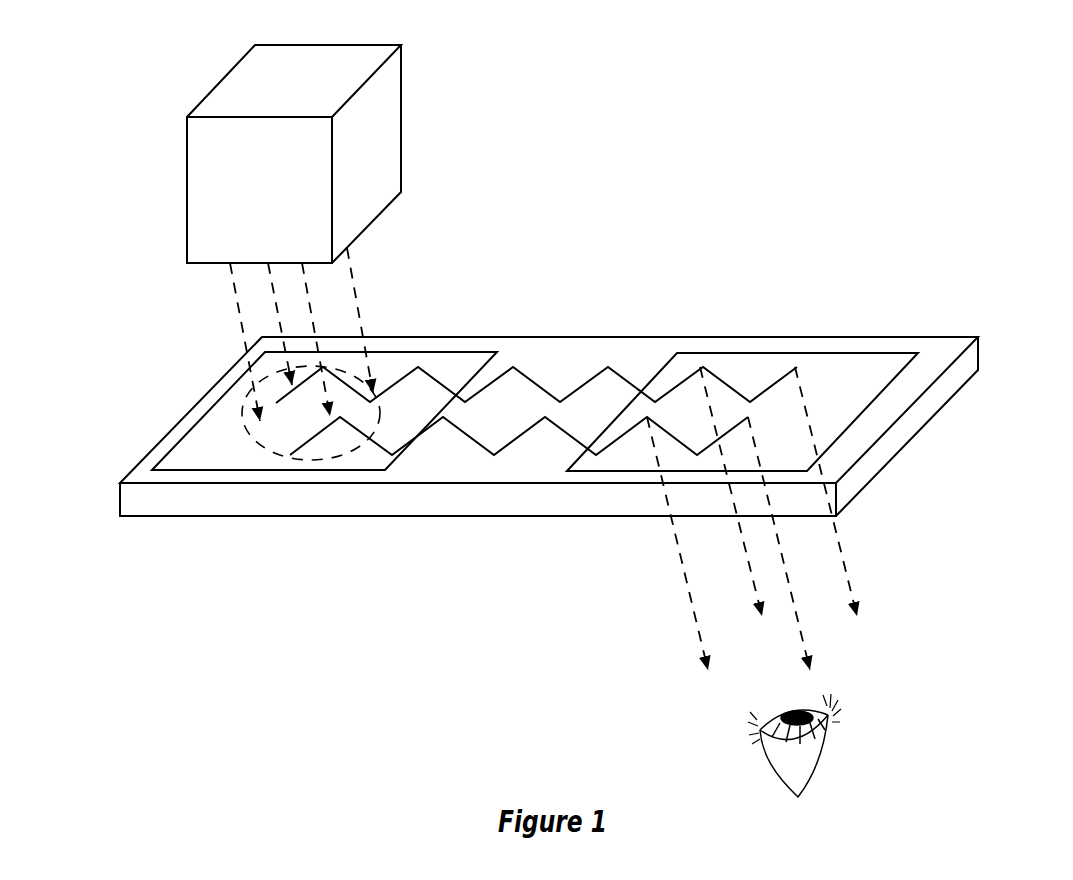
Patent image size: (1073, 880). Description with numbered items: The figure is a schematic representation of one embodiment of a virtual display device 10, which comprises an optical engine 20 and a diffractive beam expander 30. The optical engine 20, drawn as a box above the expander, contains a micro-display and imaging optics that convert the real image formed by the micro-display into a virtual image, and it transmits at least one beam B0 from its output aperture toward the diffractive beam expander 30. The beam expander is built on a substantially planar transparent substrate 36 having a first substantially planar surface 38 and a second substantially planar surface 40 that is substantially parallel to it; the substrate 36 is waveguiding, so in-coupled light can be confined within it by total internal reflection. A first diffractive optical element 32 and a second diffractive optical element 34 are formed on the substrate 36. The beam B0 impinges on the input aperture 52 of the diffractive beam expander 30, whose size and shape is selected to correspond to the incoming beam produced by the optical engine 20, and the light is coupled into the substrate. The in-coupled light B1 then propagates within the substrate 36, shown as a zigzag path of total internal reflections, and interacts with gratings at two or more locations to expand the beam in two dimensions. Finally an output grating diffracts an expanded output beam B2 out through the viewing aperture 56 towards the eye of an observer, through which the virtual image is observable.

The virtual display device 10 is at (718, 163).
The optical engine 20 is at (390, 117).
The diffractive beam expander 30 is at (554, 422).
The first diffractive optical element 32 is at (455, 353).
The second diffractive optical element 34 is at (798, 353).
The substrate 36 is at (118, 503).
The first substantially planar surface 38 is at (192, 408).
The second substantially planar surface 40 is at (170, 517).
The input aperture 52 is at (272, 453).
The viewing aperture 56 is at (868, 405).
The beam B0 is at (345, 290).
The in-coupled light B1 is at (468, 438).
The expanded output beam B2 is at (752, 518).